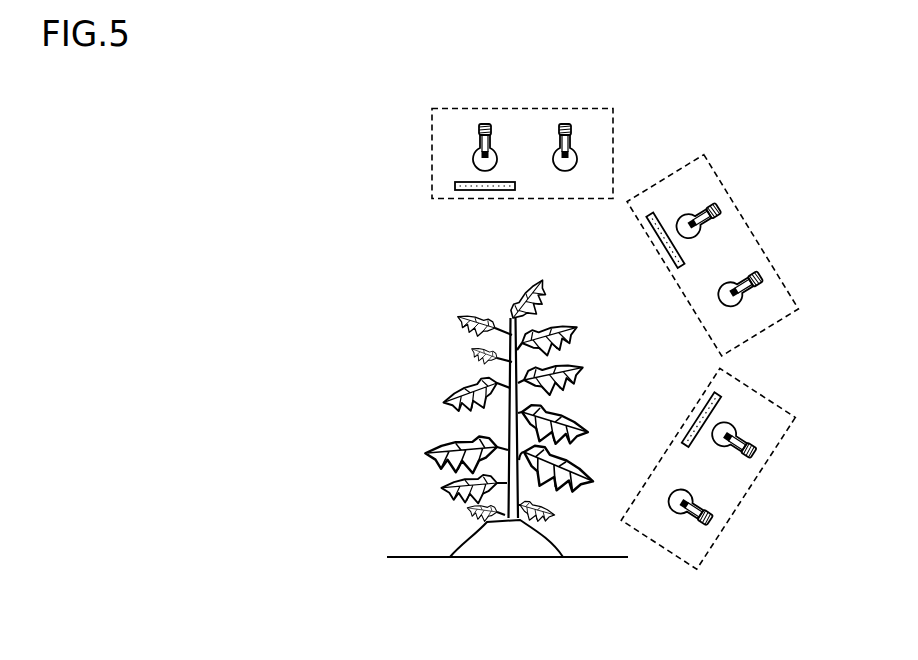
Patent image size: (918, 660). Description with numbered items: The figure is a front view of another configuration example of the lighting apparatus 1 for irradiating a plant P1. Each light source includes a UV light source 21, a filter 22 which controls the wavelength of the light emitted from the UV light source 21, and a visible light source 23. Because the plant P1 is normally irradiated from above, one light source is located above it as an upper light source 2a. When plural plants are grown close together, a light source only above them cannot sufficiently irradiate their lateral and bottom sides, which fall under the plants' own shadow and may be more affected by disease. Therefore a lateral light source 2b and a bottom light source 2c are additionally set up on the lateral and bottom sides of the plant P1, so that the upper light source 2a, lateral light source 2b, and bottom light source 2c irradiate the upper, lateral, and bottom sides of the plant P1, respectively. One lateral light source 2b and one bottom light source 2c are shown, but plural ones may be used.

The lighting apparatus 1 is at (538, 78).
The upper light source 2a is at (613, 138).
The lateral light source 2b is at (772, 328).
The bottom light source 2c is at (670, 553).
The UV light source 21 is at (498, 148).
The filter 22 is at (455, 186).
The visible light source 23 is at (578, 150).
The plant P1 is at (443, 406).